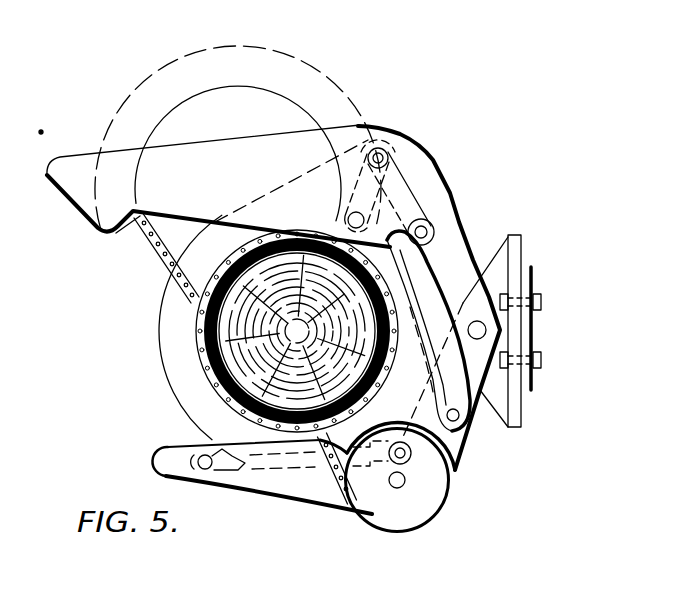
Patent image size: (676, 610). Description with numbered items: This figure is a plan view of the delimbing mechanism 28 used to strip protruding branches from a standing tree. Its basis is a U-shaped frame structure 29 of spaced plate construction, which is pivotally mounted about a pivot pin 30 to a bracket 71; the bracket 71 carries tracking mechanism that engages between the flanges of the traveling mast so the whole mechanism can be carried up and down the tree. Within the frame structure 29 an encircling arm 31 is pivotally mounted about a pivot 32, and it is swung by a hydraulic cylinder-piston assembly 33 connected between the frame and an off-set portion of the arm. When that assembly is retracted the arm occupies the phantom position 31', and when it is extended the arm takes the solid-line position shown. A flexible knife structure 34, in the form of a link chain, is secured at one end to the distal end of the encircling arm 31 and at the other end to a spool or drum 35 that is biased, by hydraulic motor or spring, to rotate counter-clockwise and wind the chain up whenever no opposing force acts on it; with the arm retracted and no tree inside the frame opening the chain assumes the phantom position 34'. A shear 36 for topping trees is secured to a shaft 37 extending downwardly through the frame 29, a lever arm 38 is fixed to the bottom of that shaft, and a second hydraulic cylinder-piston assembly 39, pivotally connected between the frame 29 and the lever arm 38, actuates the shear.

The delimbing mechanism 28 is at (464, 165).
The U-shaped frame structure 29 is at (415, 163).
The pivot pin 30 is at (487, 331).
The encircling arm 31 is at (175, 327).
The encircling arm phantom position 31' is at (238, 115).
The pivot 32 is at (350, 214).
The hydraulic cylinder-piston assembly 33 is at (395, 215).
The flexible knife structure 34 is at (253, 367).
The flexible knife structure phantom position 34' is at (148, 257).
The spool or drum 35 is at (424, 500).
The shear 36 is at (440, 285).
The shaft 37 is at (460, 430).
The lever arm 38 is at (445, 440).
The hydraulic cylinder-piston assembly 39 is at (315, 466).
The bracket 71 is at (518, 256).